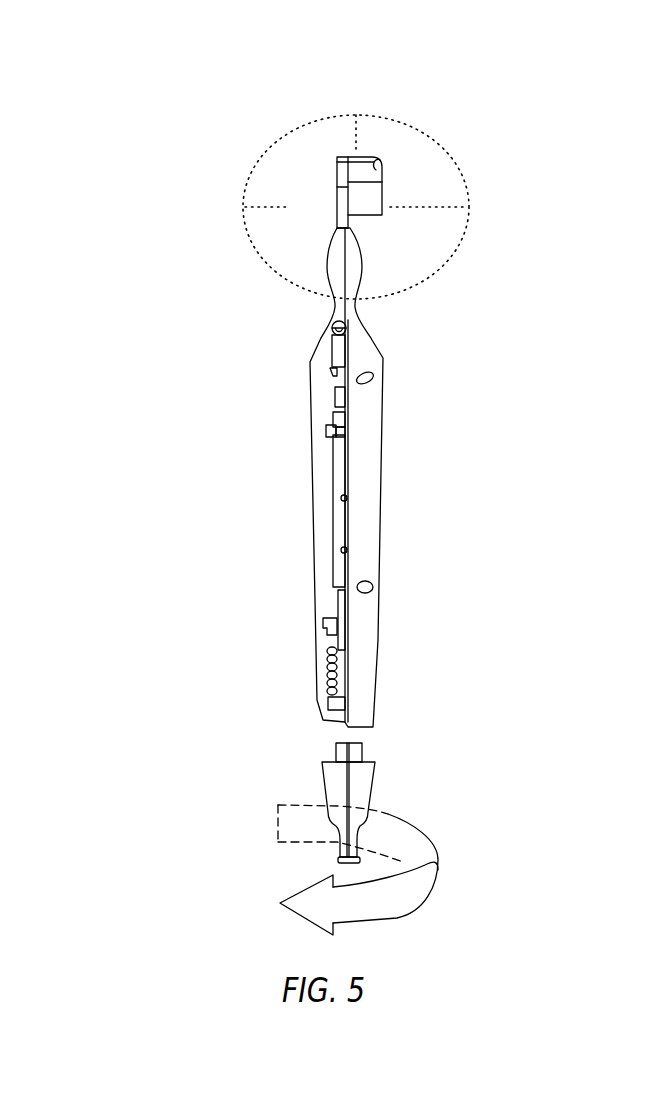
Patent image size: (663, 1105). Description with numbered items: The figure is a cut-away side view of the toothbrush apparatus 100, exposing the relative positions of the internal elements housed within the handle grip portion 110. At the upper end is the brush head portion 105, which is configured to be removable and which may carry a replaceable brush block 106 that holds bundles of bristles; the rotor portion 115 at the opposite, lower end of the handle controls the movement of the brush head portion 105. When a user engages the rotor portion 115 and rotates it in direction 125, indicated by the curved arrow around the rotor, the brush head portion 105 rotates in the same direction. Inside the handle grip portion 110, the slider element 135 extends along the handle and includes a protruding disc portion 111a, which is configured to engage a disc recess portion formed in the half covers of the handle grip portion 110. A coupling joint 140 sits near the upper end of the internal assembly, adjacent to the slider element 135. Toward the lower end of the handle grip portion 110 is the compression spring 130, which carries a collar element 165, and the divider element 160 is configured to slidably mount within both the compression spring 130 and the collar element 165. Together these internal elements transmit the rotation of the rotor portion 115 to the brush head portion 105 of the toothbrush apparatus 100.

The toothbrush apparatus 100 is at (115, 78).
The brush head portion 105 is at (340, 178).
The brush block 106 is at (382, 197).
The handle grip portion 110 is at (377, 523).
The protruding disc portion 111a is at (328, 430).
The rotor portion 115 is at (375, 780).
The direction 125 is at (438, 862).
The compression spring 130 is at (328, 678).
The slider element 135 is at (333, 480).
The coupling joint 140 is at (333, 393).
The divider element 160 is at (333, 620).
The collar element 165 is at (325, 633).